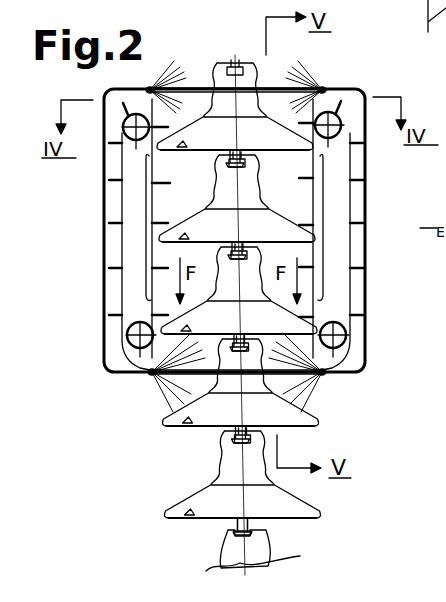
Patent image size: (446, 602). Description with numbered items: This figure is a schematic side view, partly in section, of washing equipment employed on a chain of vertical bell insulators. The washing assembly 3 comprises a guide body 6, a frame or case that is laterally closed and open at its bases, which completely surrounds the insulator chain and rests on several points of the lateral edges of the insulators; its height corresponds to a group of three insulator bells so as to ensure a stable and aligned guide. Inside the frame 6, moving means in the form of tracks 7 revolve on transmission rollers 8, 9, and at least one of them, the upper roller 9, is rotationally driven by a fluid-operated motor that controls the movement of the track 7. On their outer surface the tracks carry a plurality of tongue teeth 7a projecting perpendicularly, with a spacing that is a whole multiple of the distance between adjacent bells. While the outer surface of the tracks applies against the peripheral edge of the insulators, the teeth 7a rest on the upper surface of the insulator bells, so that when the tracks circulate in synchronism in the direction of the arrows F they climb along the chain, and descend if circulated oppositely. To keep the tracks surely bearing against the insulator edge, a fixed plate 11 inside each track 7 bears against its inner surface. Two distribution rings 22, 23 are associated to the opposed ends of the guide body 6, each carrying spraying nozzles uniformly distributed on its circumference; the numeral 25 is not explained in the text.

The washing assembly 3 is at (98, 301).
The guide body 6 is at (108, 330).
The track 7 is at (120, 250).
The tongue teeth 7a is at (163, 188).
The transmission roller 8 is at (132, 350).
The upper roller 9 is at (134, 141).
The fixed plate 11 is at (120, 268).
The distribution ring 22 is at (162, 395).
The distribution ring 23 is at (186, 90).
The insulator string 25 is at (250, 328).